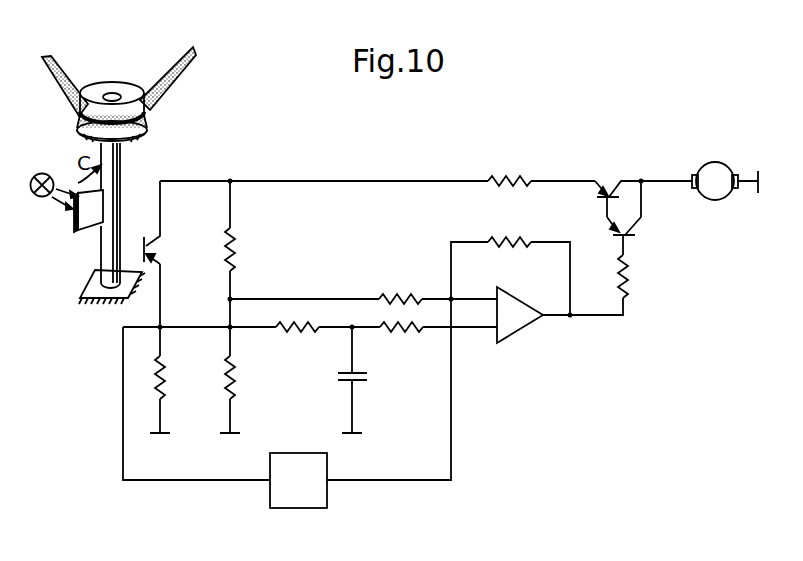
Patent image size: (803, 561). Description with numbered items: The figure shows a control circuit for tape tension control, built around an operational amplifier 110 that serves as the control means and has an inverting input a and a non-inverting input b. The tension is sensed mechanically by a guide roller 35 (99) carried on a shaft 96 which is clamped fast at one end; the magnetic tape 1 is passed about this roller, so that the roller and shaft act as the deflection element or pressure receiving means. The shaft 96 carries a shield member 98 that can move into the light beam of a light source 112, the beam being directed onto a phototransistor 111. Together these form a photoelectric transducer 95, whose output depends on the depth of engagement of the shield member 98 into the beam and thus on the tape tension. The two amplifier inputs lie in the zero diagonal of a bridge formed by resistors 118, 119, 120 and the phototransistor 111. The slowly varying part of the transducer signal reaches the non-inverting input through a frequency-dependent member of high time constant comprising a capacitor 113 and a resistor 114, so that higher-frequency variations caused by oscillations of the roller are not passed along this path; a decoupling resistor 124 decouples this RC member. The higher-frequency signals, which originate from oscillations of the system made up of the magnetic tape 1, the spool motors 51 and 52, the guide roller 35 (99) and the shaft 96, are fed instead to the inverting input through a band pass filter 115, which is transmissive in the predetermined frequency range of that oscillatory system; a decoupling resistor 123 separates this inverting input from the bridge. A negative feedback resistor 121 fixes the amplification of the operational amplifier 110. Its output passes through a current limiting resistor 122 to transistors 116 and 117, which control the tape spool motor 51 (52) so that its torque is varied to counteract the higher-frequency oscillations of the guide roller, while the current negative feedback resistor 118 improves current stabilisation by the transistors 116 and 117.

The magnetic tape 1 is at (189, 74).
The guide roller 35 is at (135, 89).
The guide roller 99 is at (135, 89).
The photoelectric transducer 95 is at (164, 165).
The shaft 96 is at (124, 187).
The shield member 98 is at (80, 233).
The light source 112 is at (54, 205).
The phototransistor 111 is at (156, 245).
The current negative feedback resistor 118 is at (506, 176).
The resistor 119 is at (238, 382).
The resistor 120 is at (167, 380).
The resistor 114 is at (299, 312).
The decoupling resistor 123 is at (398, 293).
The decoupling resistor 124 is at (399, 334).
The negative feedback resistor 121 is at (512, 238).
The current limiting resistor 122 is at (633, 278).
The capacitor 113 is at (365, 383).
The operational amplifier 110 is at (522, 337).
The band pass filter 115 is at (330, 496).
The transistor 116 is at (599, 186).
The transistor 117 is at (636, 233).
The spool motor 51 is at (699, 165).
The spool motor 52 is at (712, 165).